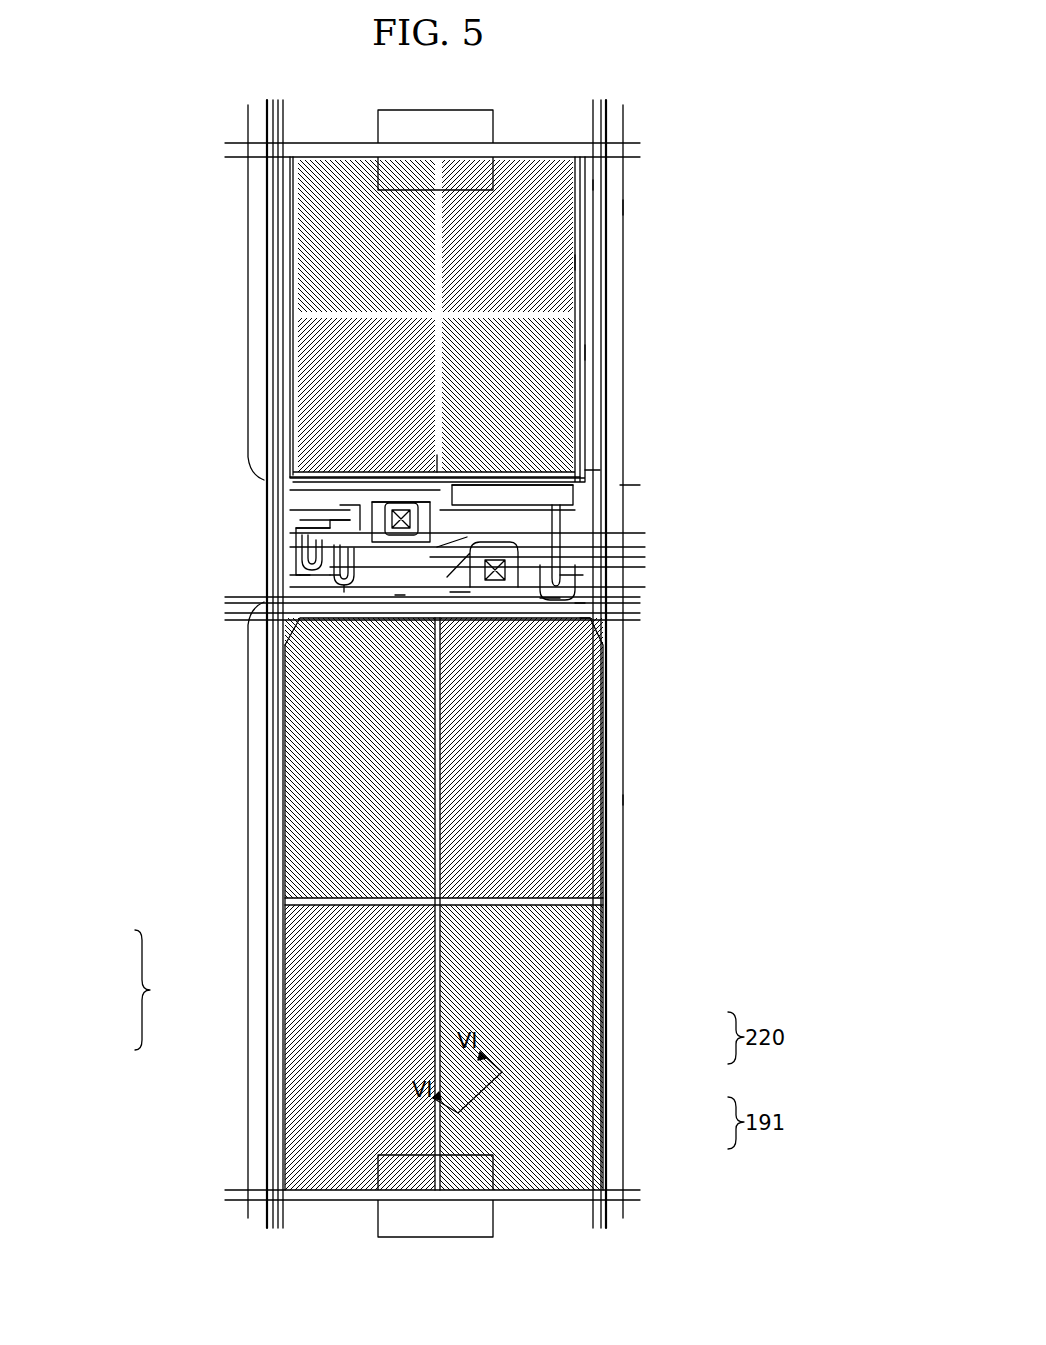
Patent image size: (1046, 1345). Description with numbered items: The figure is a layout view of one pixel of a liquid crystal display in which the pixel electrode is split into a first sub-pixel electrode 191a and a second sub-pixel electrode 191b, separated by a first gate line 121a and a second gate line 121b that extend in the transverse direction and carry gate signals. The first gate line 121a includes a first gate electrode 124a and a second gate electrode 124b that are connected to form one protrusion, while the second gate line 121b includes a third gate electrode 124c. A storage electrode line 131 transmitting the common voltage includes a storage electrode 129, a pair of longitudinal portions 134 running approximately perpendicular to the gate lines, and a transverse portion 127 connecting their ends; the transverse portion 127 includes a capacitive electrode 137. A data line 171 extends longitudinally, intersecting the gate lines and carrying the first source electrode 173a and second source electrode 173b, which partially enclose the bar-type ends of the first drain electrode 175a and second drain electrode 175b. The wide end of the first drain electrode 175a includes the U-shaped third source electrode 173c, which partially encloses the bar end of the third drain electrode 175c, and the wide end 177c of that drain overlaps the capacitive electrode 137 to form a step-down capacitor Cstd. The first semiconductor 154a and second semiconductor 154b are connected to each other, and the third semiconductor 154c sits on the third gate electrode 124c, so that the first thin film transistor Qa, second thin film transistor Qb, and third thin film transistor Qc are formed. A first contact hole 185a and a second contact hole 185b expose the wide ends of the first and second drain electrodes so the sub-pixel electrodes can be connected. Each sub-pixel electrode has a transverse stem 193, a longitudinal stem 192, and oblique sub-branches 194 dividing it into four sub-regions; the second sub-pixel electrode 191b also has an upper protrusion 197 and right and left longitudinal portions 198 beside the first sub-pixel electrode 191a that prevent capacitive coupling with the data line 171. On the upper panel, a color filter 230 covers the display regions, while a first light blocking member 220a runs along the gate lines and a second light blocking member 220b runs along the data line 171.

The storage electrode line 131 is at (507, 152).
The data line 171 is at (268, 195).
The color filter 230 is at (248, 252).
The first sub-pixel electrode 191a is at (578, 298).
The second sub-pixel electrode 191b is at (440, 904).
The first gate line 121a is at (618, 533).
The second gate line 121b is at (625, 597).
The capacitive electrode 137 is at (577, 533).
The step-down capacitor Cstd is at (545, 478).
The second semiconductor 154b is at (300, 560).
The second drain electrode 175b is at (305, 540).
The second thin film transistor Qb is at (325, 555).
The transverse portion 127 is at (292, 521).
The first contact hole 185a is at (448, 592).
The second contact hole 185b is at (500, 588).
The third drain electrode 175c is at (560, 562).
The first gate electrode 124a is at (350, 512).
The first thin film transistor Qa is at (340, 520).
The first source electrode 173a is at (310, 528).
The second source electrode 173b is at (290, 580).
The second gate electrode 124b is at (335, 578).
The first drain electrode 175a is at (348, 592).
The first semiconductor 154a is at (400, 598).
The third gate electrode 124c is at (583, 583).
The third thin film transistor Qc is at (560, 598).
The third source electrode 173c is at (580, 605).
The third semiconductor 154c is at (585, 620).
The wide end of third drain electrode 177c is at (600, 473).
The storage electrode 129 is at (595, 183).
The longitudinal portion 134 is at (578, 262).
The right and left longitudinal portions 198 is at (590, 352).
The first light blocking member 220a is at (437, 458).
The second light blocking member 220b is at (625, 207).
The sub-branches 194 is at (300, 822).
The longitudinal stem 192 is at (440, 830).
The transverse stem 193 is at (600, 905).
The upper protrusion 197 is at (470, 600).